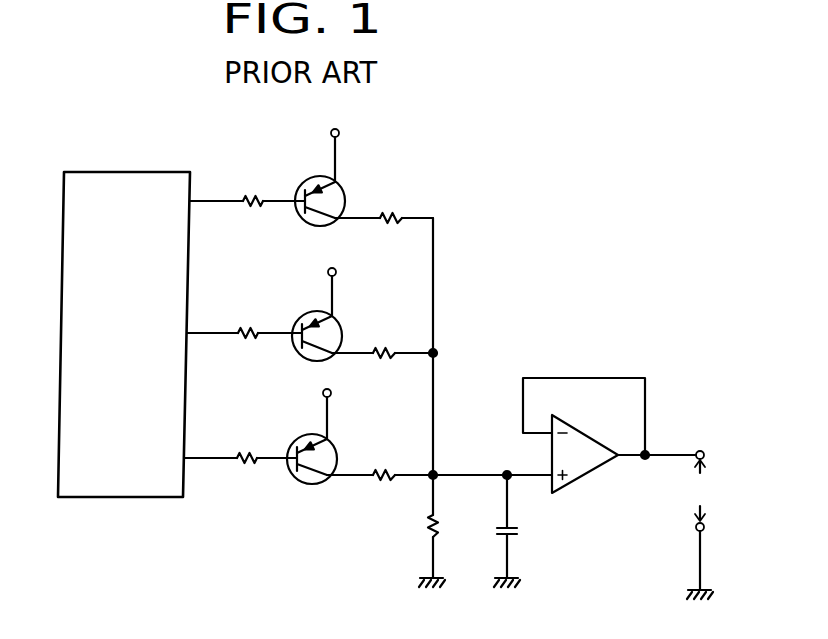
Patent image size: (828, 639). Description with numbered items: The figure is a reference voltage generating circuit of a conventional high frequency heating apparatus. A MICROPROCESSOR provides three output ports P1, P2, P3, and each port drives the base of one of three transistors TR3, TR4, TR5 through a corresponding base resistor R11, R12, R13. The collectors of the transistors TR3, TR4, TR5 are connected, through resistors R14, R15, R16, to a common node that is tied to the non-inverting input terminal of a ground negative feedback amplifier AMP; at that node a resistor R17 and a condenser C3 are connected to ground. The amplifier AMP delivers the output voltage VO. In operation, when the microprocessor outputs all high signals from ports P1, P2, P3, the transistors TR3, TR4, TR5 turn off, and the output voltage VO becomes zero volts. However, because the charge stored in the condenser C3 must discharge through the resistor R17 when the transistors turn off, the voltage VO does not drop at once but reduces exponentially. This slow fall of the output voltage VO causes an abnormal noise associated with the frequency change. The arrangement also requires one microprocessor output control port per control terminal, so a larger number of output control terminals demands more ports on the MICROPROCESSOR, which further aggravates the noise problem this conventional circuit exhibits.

The microprocessor MICROPROCESSOR is at (95, 478).
The output port P1 is at (201, 201).
The output port P2 is at (194, 334).
The output port P3 is at (192, 459).
The resistor R11 is at (271, 187).
The resistor R12 is at (264, 318).
The resistor R13 is at (262, 443).
The resistor R14 is at (384, 203).
The resistor R15 is at (382, 338).
The resistor R16 is at (439, 461).
The resistor R17 is at (450, 531).
The condenser C3 is at (524, 531).
The transistor TR3 is at (328, 181).
The transistor TR4 is at (326, 320).
The transistor TR5 is at (324, 443).
The ground negative feedback amplifier AMP is at (581, 428).
The output voltage VO is at (700, 525).